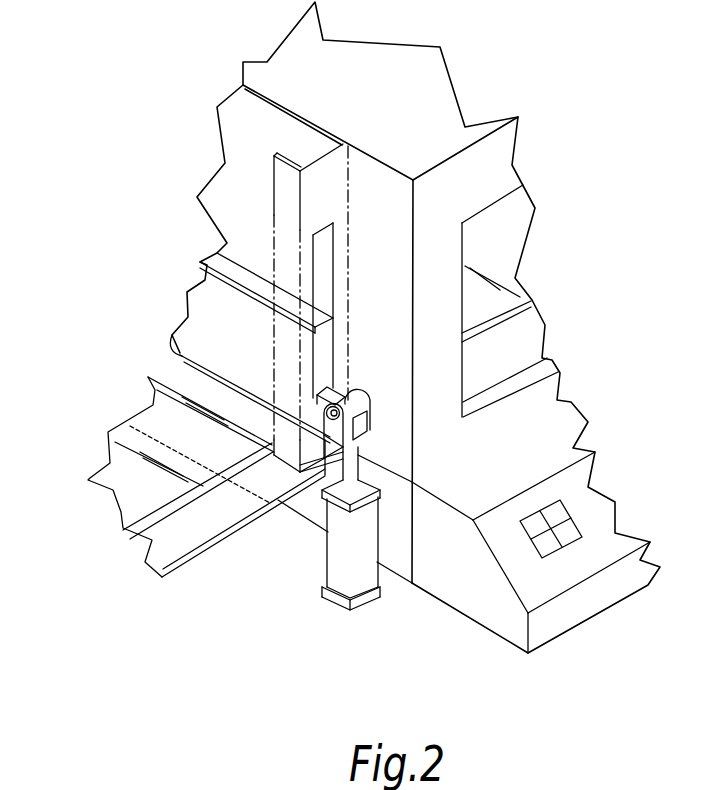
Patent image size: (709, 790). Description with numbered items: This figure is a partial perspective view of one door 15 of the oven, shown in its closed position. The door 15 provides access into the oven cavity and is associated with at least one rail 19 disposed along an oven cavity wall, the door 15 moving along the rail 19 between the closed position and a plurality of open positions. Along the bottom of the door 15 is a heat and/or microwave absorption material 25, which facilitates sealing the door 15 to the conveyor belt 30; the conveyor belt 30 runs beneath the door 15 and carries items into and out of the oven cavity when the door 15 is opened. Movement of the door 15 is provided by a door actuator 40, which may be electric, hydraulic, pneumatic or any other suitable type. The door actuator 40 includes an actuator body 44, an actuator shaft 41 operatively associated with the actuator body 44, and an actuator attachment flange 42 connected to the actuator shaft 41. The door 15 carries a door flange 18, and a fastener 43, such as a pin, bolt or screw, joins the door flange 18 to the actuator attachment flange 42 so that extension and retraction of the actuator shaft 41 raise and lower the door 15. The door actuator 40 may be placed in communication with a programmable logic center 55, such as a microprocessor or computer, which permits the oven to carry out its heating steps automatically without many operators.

The door 15 is at (217, 253).
The door flange 18 is at (333, 393).
The rail 19 is at (345, 143).
The heat and/or microwave absorption material 25 is at (180, 356).
The conveyor belt 30 is at (153, 405).
The door actuator 40 is at (336, 416).
The actuator shaft 41 is at (355, 467).
The actuator attachment flange 42 is at (370, 420).
The fastener 43 is at (327, 412).
The actuator body 44 is at (372, 537).
The programmable logic center 55 is at (558, 425).